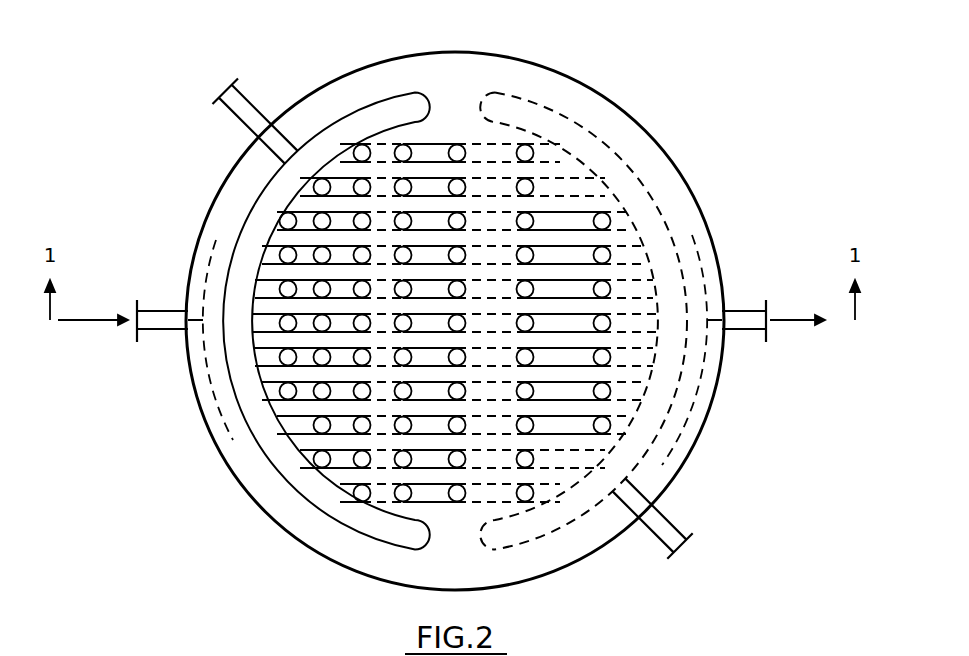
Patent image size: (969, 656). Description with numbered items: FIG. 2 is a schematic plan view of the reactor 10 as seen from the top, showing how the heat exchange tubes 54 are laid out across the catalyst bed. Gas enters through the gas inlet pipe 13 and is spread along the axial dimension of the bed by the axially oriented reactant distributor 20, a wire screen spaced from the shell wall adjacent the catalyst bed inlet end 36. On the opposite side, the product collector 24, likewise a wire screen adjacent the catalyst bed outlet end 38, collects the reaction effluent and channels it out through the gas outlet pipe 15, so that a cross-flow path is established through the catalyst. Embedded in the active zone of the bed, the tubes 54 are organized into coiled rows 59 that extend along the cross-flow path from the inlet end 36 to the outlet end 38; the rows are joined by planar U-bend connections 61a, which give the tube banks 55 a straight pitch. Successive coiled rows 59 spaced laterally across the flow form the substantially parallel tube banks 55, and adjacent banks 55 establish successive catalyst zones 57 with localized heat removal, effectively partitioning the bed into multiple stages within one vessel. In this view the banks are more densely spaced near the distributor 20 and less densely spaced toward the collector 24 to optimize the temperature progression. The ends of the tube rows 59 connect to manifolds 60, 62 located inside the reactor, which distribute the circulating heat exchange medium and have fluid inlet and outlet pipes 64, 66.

The reactor 10 is at (240, 482).
The gas inlet pipe 13 is at (165, 311).
The gas outlet pipe 15 is at (748, 308).
The reactant distributor 20 is at (203, 356).
The product collector 24 is at (700, 363).
The catalyst bed inlet end 36 is at (285, 372).
The catalyst bed outlet end 38 is at (615, 200).
The heat exchange tubes 54 is at (540, 210).
The tube banks 55 is at (412, 555).
The catalyst zones 57 is at (480, 190).
The coiled rows 59 is at (633, 350).
The manifold 60 is at (250, 232).
The U-bend connections 61a is at (512, 140).
The manifold 62 is at (690, 396).
The fluid inlet pipe 64 is at (218, 102).
The fluid outlet pipe 66 is at (673, 557).